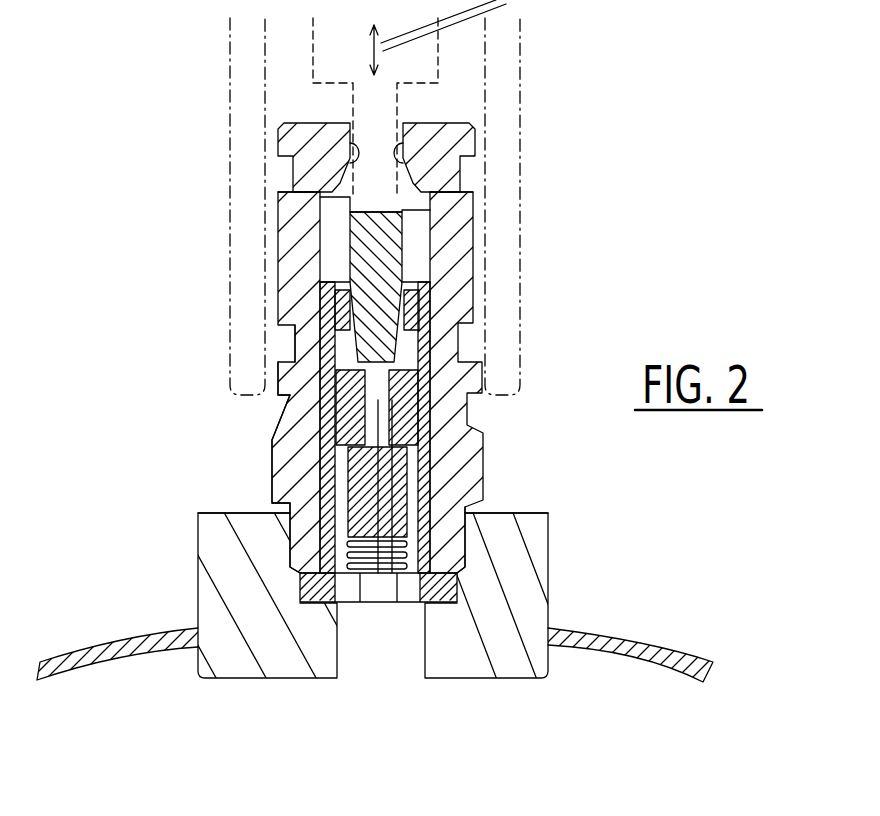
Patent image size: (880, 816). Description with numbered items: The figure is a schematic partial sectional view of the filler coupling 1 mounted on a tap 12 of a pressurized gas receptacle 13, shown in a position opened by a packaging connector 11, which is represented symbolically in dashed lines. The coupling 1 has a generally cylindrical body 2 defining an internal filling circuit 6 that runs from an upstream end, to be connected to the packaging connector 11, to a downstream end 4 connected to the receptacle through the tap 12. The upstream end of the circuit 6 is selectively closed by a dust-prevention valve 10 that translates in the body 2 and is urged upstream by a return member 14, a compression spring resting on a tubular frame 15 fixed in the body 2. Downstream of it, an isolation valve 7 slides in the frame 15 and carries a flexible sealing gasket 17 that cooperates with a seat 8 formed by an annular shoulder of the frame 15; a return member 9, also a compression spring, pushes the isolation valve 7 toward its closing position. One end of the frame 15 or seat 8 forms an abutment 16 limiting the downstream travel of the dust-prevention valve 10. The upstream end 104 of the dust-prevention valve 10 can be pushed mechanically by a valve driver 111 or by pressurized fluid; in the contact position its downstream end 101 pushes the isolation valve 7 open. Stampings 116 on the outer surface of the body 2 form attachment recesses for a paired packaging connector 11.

The filler coupling 1 is at (110, 368).
The body 2 is at (475, 238).
The downstream end 4 is at (478, 518).
The internal filling circuit 6 is at (470, 190).
The isolation valve 7 is at (290, 480).
The seat 8 is at (440, 375).
The return member 9 is at (484, 480).
The dust-prevention valve 10 is at (350, 258).
The packaging connector 11 is at (228, 67).
The tap 12 is at (507, 622).
The receptacle 13 is at (423, 105).
The return member 14 is at (440, 350).
The tubular frame 15 is at (440, 470).
The abutment 16 is at (432, 327).
The flexible sealing gasket 17 is at (395, 440).
The downstream end 101 is at (288, 410).
The upstream end 104 is at (435, 212).
The valve driver 111 is at (300, 192).
The stampings 116 is at (288, 345).